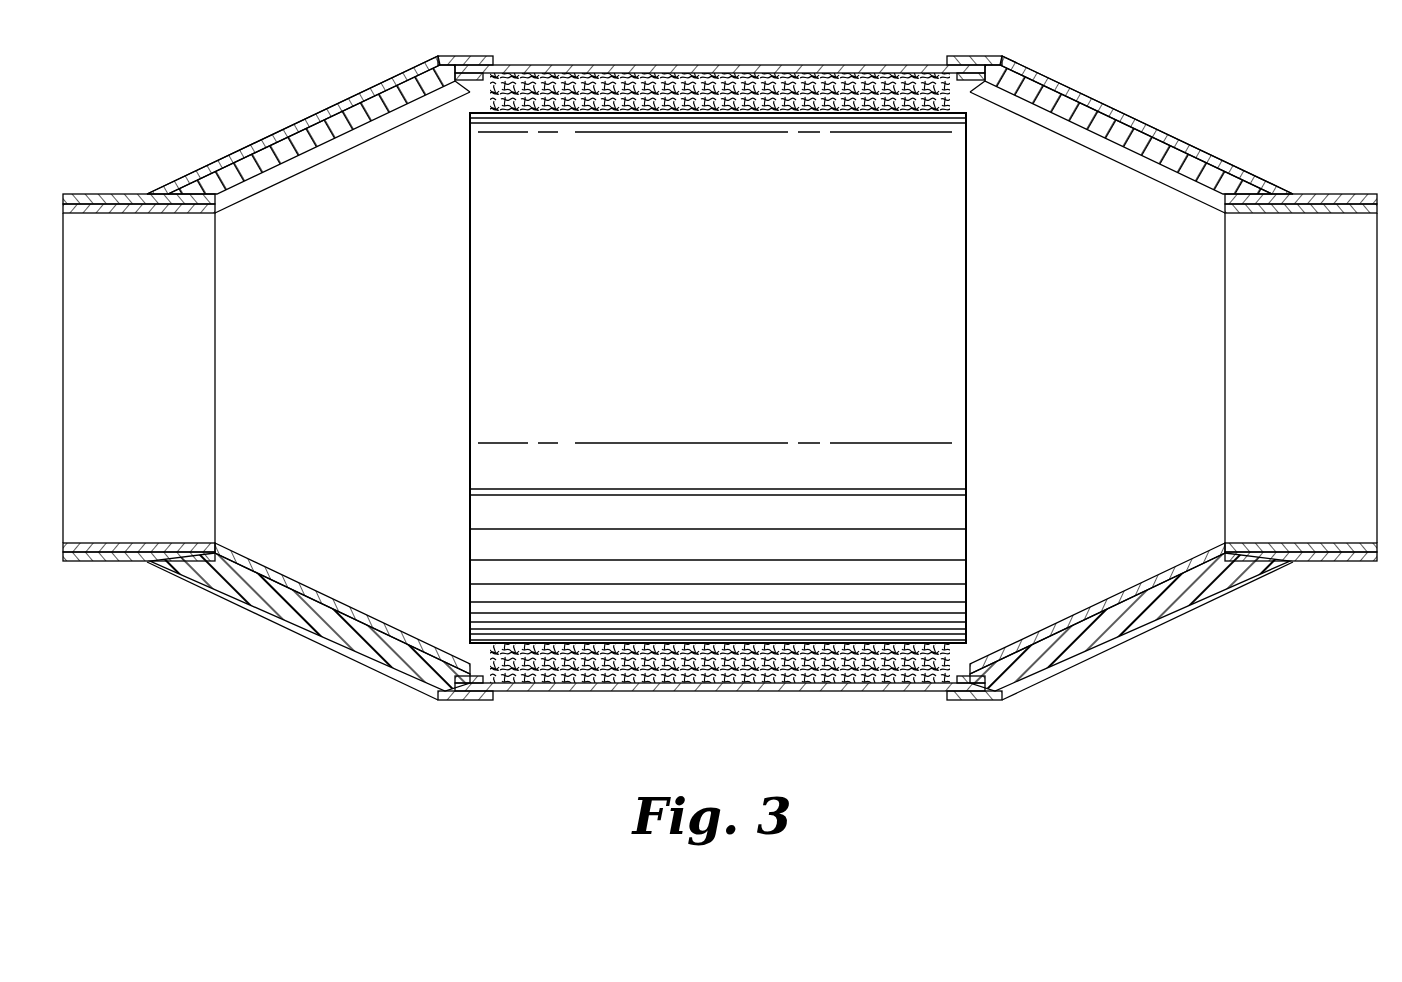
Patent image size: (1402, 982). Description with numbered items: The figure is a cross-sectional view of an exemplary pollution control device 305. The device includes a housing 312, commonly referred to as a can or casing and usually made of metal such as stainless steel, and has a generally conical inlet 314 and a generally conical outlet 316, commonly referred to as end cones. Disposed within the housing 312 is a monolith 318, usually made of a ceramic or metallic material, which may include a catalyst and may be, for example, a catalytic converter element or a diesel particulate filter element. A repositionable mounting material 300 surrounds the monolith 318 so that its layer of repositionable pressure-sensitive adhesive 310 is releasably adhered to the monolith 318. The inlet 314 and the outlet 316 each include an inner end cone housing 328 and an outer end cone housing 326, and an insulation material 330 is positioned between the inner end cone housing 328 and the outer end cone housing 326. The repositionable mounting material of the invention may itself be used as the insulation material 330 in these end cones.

The repositionable mounting material 300 is at (736, 90).
The pollution control device 305 is at (294, 664).
The layer of repositionable pressure-sensitive adhesive 310 is at (973, 75).
The housing 312 is at (585, 65).
The inlet 314 is at (251, 142).
The outlet 316 is at (1222, 156).
The monolith 318 is at (693, 362).
The outer end cone housing 326 is at (367, 88).
The inner end cone housing 328 is at (378, 134).
The insulation material 330 is at (307, 130).